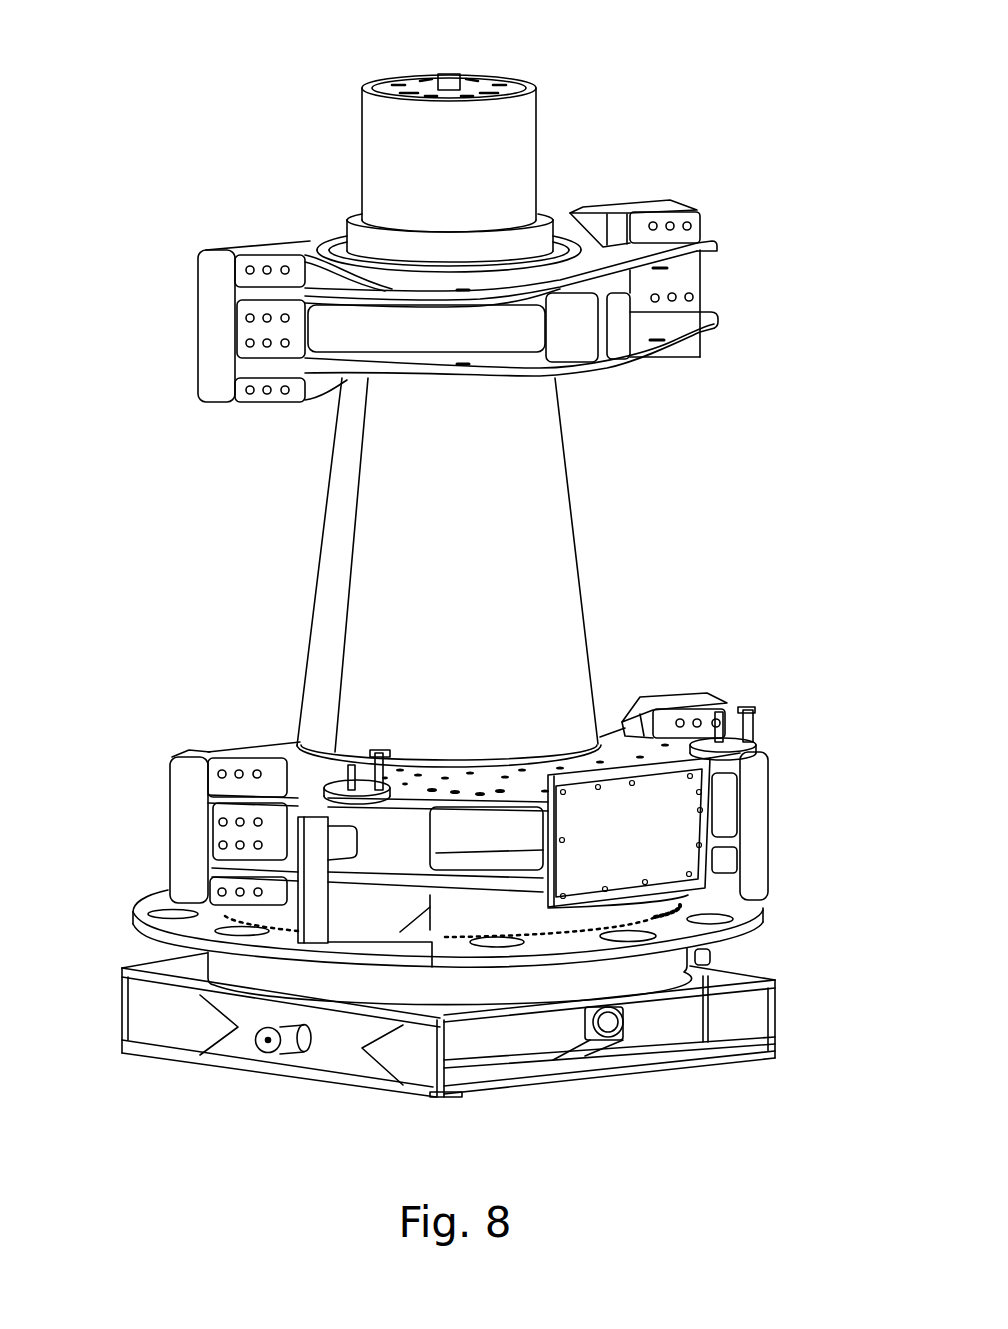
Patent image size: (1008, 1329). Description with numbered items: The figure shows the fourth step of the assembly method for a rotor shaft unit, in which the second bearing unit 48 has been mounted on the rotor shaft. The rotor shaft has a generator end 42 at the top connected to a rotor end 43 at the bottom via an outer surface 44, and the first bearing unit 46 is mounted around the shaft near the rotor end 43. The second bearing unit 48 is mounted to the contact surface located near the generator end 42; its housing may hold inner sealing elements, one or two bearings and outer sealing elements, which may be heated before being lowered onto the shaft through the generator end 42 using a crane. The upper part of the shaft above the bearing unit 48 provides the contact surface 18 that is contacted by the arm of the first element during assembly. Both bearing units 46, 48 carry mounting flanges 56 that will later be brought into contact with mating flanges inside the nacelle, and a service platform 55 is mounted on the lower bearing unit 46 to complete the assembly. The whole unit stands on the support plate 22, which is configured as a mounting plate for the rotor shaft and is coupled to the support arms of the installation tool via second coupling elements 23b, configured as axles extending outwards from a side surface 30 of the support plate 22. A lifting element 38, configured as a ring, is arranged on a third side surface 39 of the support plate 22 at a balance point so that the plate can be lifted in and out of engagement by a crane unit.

The contact surface 18 is at (392, 170).
The generator end 42 is at (530, 72).
The second bearing unit 48 is at (714, 295).
The mounting flanges 56 is at (245, 242).
The outer surface 44 is at (451, 575).
The first bearing unit 46 is at (160, 838).
The service platform 55 is at (673, 828).
The rotor end 43 is at (772, 925).
The support plate 22 is at (121, 1013).
The side surface 30 is at (337, 1060).
The second coupling element 23b is at (288, 1060).
The third side surface 39 is at (511, 1081).
The lifting element 38 is at (636, 1020).